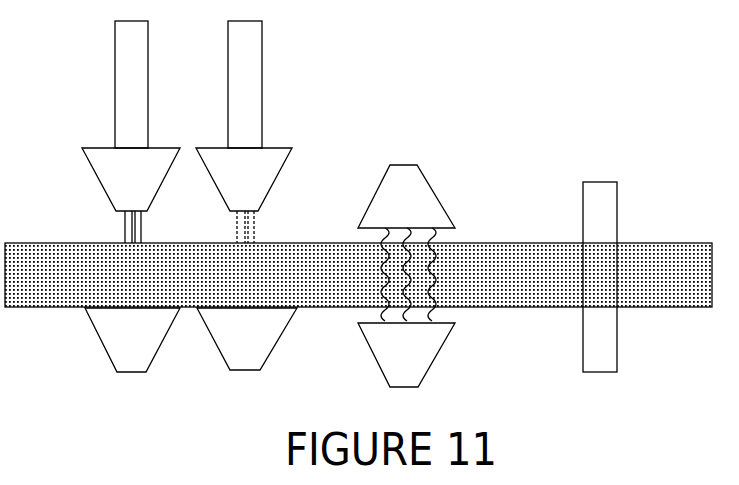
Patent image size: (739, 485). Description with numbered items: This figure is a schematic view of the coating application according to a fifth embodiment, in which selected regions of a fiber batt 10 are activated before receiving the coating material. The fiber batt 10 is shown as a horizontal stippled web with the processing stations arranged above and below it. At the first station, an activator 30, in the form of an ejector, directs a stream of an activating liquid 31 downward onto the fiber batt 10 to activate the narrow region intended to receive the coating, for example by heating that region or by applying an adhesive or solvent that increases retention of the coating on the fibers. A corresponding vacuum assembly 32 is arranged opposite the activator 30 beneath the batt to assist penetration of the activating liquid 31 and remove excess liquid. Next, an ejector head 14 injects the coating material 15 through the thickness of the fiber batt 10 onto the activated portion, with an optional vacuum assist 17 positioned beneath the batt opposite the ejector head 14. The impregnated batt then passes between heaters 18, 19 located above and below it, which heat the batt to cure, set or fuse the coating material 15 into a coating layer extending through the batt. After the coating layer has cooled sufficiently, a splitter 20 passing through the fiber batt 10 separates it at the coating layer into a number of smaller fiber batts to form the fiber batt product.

The fiber batt 10 is at (652, 294).
The ejector head 14 is at (297, 148).
The coating material 15 is at (258, 228).
The vacuum assist 17 is at (217, 350).
The heater 18 is at (449, 212).
The heater 19 is at (449, 338).
The splitter 20 is at (621, 203).
The activator 30 is at (80, 149).
The activating liquid 31 is at (120, 229).
The vacuum assembly 32 is at (99, 338).